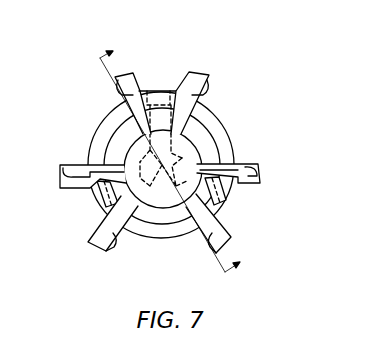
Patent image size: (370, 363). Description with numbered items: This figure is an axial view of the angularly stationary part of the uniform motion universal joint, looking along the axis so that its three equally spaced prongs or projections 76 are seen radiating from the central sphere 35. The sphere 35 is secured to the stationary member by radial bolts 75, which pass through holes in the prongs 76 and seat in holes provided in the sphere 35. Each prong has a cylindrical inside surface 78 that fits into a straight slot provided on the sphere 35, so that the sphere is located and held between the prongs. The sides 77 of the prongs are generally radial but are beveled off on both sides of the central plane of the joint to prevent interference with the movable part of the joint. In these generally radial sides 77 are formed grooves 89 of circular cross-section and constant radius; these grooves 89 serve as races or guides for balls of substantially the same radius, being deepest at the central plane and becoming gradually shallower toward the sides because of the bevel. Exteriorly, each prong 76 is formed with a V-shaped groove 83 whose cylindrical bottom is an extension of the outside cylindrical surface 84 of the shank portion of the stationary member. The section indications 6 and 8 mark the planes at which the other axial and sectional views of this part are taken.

The section line 6- 6 is at (177, 154).
The arm flange 8 is at (96, 84).
The V-shaped groove 83 is at (173, 78).
The groove 89 is at (192, 93).
The outside cylindrical surface 84 is at (223, 130).
The central sphere 35 is at (196, 155).
The prongs 76 is at (261, 180).
The sides of the prongs 77 is at (96, 152).
The cylindrical inside surfaces 78 is at (150, 162).
The radial bolts 75 is at (150, 186).